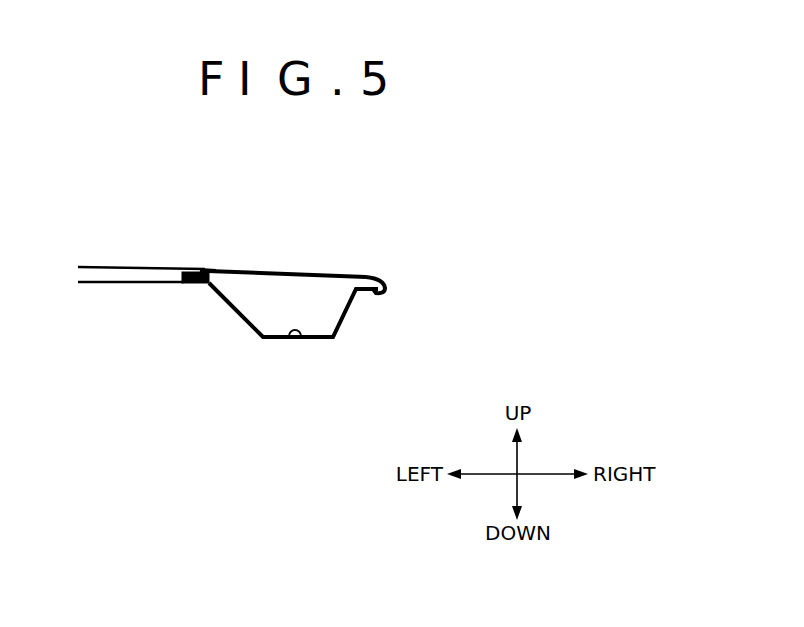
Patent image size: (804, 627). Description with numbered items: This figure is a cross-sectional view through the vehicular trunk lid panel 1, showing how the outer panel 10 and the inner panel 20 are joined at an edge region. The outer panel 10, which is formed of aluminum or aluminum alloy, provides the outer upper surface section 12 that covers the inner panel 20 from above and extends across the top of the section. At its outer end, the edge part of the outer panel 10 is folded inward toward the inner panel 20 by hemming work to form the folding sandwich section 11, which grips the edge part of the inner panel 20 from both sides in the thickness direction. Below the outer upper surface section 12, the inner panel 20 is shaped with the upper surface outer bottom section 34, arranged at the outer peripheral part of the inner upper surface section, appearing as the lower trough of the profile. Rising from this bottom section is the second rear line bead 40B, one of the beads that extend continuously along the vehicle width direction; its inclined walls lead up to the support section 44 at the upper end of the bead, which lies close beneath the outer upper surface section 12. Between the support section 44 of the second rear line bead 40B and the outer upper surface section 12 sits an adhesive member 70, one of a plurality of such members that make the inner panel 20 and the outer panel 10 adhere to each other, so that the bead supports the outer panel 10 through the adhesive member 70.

The vehicular trunk lid panel 1 is at (382, 166).
The outer panel 10 is at (283, 262).
The folding sandwich section 11 is at (386, 278).
The outer upper surface section 12 is at (211, 270).
The inner panel 20 is at (340, 292).
The upper surface outer bottom section 34 is at (292, 341).
The second rear line bead 40B is at (141, 282).
The support section 44 is at (104, 282).
The adhesive member 70 is at (172, 273).